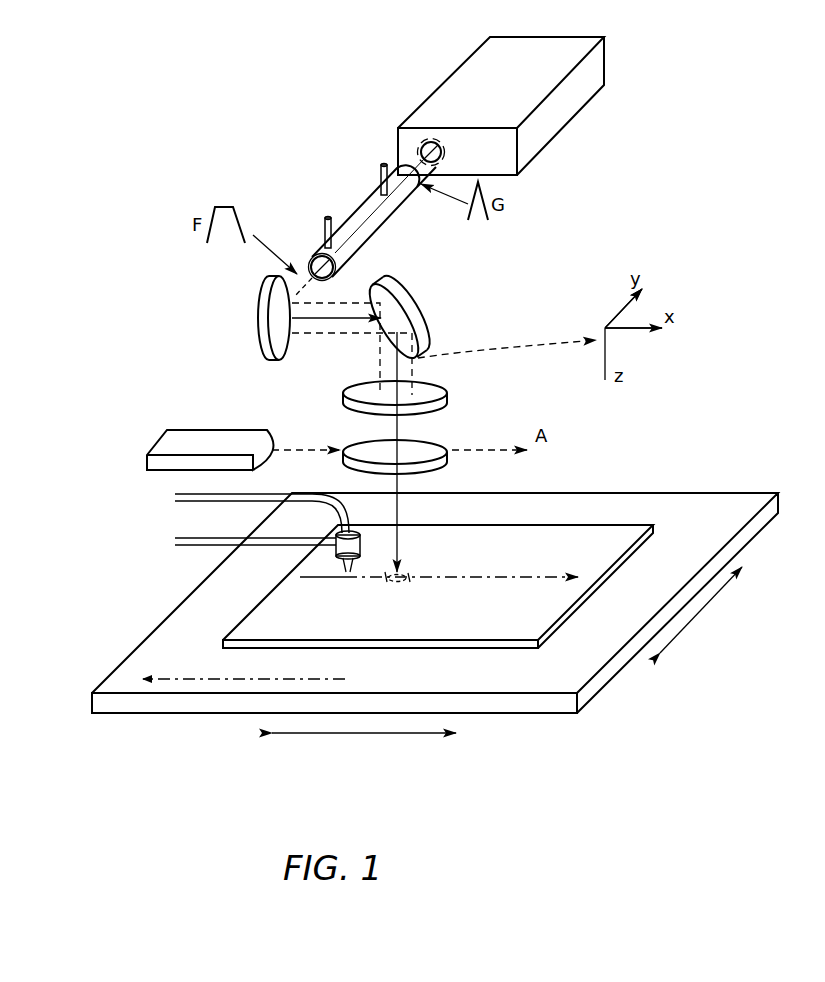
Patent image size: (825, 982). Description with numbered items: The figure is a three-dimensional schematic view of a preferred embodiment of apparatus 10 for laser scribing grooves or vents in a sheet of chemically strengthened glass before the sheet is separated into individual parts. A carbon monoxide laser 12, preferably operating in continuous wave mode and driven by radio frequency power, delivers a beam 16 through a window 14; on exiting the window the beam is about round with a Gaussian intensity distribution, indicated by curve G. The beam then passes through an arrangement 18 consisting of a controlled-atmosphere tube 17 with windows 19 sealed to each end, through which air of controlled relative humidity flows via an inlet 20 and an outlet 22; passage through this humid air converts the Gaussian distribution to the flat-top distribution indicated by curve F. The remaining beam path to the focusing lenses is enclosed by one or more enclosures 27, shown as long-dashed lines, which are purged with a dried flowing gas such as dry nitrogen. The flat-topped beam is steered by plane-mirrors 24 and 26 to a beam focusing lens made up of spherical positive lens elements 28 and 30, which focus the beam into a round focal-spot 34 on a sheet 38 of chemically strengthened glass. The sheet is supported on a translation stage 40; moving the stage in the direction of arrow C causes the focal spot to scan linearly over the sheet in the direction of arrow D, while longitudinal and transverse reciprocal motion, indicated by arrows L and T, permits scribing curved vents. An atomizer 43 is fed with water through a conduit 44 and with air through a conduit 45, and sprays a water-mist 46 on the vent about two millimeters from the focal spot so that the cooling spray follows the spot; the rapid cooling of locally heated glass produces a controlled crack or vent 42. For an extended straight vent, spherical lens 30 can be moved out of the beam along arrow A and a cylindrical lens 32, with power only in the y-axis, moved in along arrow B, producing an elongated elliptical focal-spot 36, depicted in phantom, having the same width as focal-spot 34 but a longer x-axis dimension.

The apparatus 10 is at (653, 233).
The carbon monoxide laser 12 is at (594, 112).
The window 14 is at (427, 141).
The beam 16 is at (410, 165).
The controlled-atmosphere tube 17 is at (357, 204).
The arrangement 18 is at (336, 210).
The windows 19 is at (316, 256).
The inlet 20 is at (380, 180).
The outlet 22 is at (332, 228).
The plane-mirror 24 is at (264, 315).
The plane-mirror 26 is at (425, 330).
The enclosures 27 is at (302, 303).
The spherical positive lens element 28 is at (445, 389).
The spherical positive lens element 30 is at (445, 448).
The cylindrical lens 32 is at (244, 432).
The focal-spot 34 is at (402, 572).
The focal-spot 36 is at (413, 578).
The sheet 38 is at (619, 523).
The translation stage 40 is at (151, 627).
The vent 42 is at (345, 577).
The atomizer 43 is at (330, 528).
The conduit 44 is at (220, 493).
The conduit 45 is at (180, 546).
The water-mist 46 is at (352, 562).